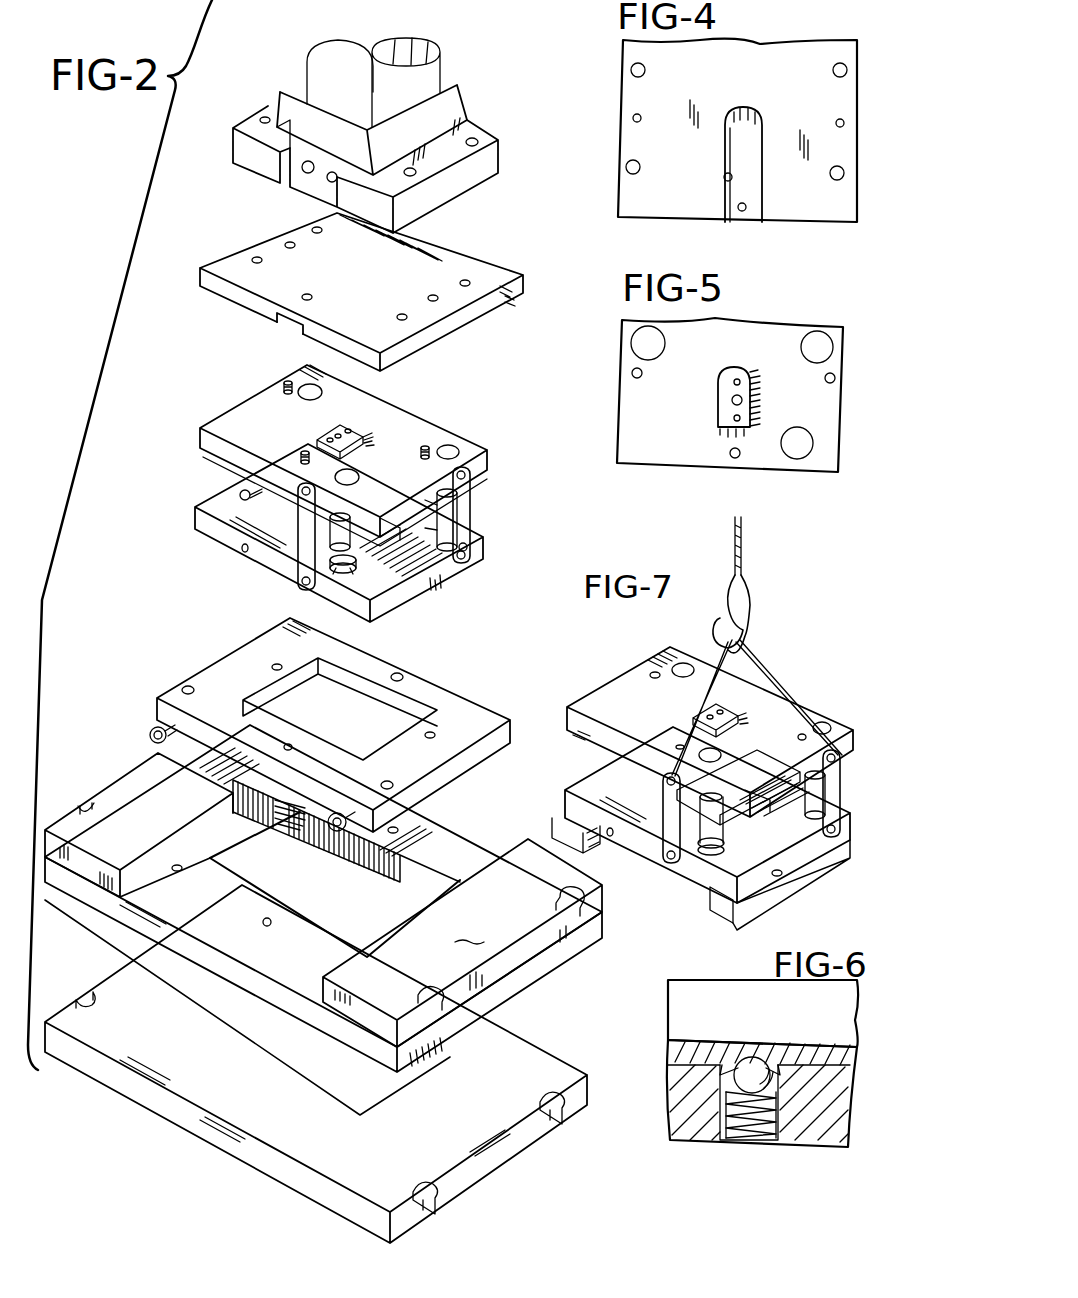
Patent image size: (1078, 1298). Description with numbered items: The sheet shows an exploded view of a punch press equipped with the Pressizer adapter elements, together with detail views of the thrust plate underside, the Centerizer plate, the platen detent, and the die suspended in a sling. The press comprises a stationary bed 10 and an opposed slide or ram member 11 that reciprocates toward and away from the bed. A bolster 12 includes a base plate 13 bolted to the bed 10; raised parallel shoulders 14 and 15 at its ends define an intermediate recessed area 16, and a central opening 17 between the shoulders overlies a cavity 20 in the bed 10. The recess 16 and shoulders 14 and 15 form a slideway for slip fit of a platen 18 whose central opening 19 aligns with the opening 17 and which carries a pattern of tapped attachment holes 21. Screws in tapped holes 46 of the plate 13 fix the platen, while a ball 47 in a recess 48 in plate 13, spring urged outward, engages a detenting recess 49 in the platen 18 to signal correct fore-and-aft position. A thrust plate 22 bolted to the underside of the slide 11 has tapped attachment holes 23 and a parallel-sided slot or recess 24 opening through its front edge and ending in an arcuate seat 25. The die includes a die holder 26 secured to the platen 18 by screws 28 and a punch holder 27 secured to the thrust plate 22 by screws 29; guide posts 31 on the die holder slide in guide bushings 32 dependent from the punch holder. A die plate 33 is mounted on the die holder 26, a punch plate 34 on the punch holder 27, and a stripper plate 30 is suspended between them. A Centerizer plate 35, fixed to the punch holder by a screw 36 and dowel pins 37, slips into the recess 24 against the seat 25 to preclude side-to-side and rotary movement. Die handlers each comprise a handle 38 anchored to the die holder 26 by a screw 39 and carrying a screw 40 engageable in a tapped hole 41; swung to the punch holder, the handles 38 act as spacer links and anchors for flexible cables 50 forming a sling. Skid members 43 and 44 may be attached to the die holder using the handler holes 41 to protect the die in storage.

In FIG. 2, the stationary bed 10 is at (130, 1088).
In FIG. 2, the slide or ram member 11 is at (252, 118).
In FIG. 2, the bolster 12 is at (79, 918).
In FIG. 2, the base plate 13 is at (130, 930).
In FIG. 6, the base plate 13 is at (668, 1107).
In FIG. 2, the shoulder 14 is at (128, 788).
In FIG. 2, the shoulder 15 is at (467, 929).
In FIG. 2, the recessed area 16 is at (490, 858).
In FIG. 2, the central opening 17 is at (428, 840).
In FIG. 2, the platen 18 is at (210, 665).
In FIG. 6, the platen 18 is at (672, 1012).
In FIG. 2, the central opening 19 is at (400, 708).
In FIG. 2, the cavity 20 is at (300, 1070).
In FIG. 2, the tapped attachment holes 21 is at (292, 745).
In FIG. 2, the thrust plate 22 is at (237, 258).
In FIG. 4, the thrust plate 22 is at (628, 99).
In FIG. 2, the tapped attachment holes 23 is at (309, 296).
In FIG. 4, the tapped attachment holes 23 is at (633, 120).
In FIG. 2, the slot or recess 24 is at (278, 322).
In FIG. 4, the slot or recess 24 is at (724, 177).
In FIG. 4, the seat 25 is at (748, 106).
In FIG. 2, the die holder 26 is at (205, 527).
In FIG. 7, the die holder 26 is at (575, 795).
In FIG. 2, the punch holder 27 is at (235, 414).
In FIG. 5, the punch holder 27 is at (622, 393).
In FIG. 7, the punch holder 27 is at (598, 697).
In FIG. 2, the screws 28 is at (468, 544).
In FIG. 2, the screws 29 is at (427, 448).
In FIG. 2, the stripper plate 30 is at (248, 475).
In FIG. 2, the guide posts 31 is at (338, 572).
In FIG. 2, the guide bushings 32 is at (342, 516).
In FIG. 2, the die plate 33 is at (240, 493).
In FIG. 2, the punch plate 34 is at (425, 505).
In FIG. 7, the punch plate 34 is at (745, 790).
In FIG. 2, the Centerizer plate 35 is at (364, 440).
In FIG. 5, the Centerizer plate 35 is at (710, 403).
In FIG. 7, the Centerizer plate 35 is at (738, 722).
In FIG. 2, the screw 36 is at (348, 429).
In FIG. 5, the screw 36 is at (743, 400).
In FIG. 2, the dowel pins 37 is at (328, 440).
In FIG. 5, the dowel pins 37 is at (738, 379).
In FIG. 2, the handle 38 is at (298, 570).
In FIG. 7, the handle 38 is at (842, 782).
In FIG. 7, the screw 39 is at (670, 860).
In FIG. 7, the screw 40 is at (667, 776).
In FIG. 2, the tapped hole 41 is at (244, 552).
In FIG. 7, the tapped hole 41 is at (610, 836).
In FIG. 7, the skid member 43 is at (560, 828).
In FIG. 7, the skid member 44 is at (805, 880).
In FIG. 2, the tapped holes 46 is at (178, 872).
In FIG. 2, the ball 47 is at (271, 919).
In FIG. 6, the ball 47 is at (738, 1060).
In FIG. 6, the recess 48 is at (730, 1120).
In FIG. 6, the detenting recess 49 is at (760, 1060).
In FIG. 7, the flexible cables 50 is at (760, 672).